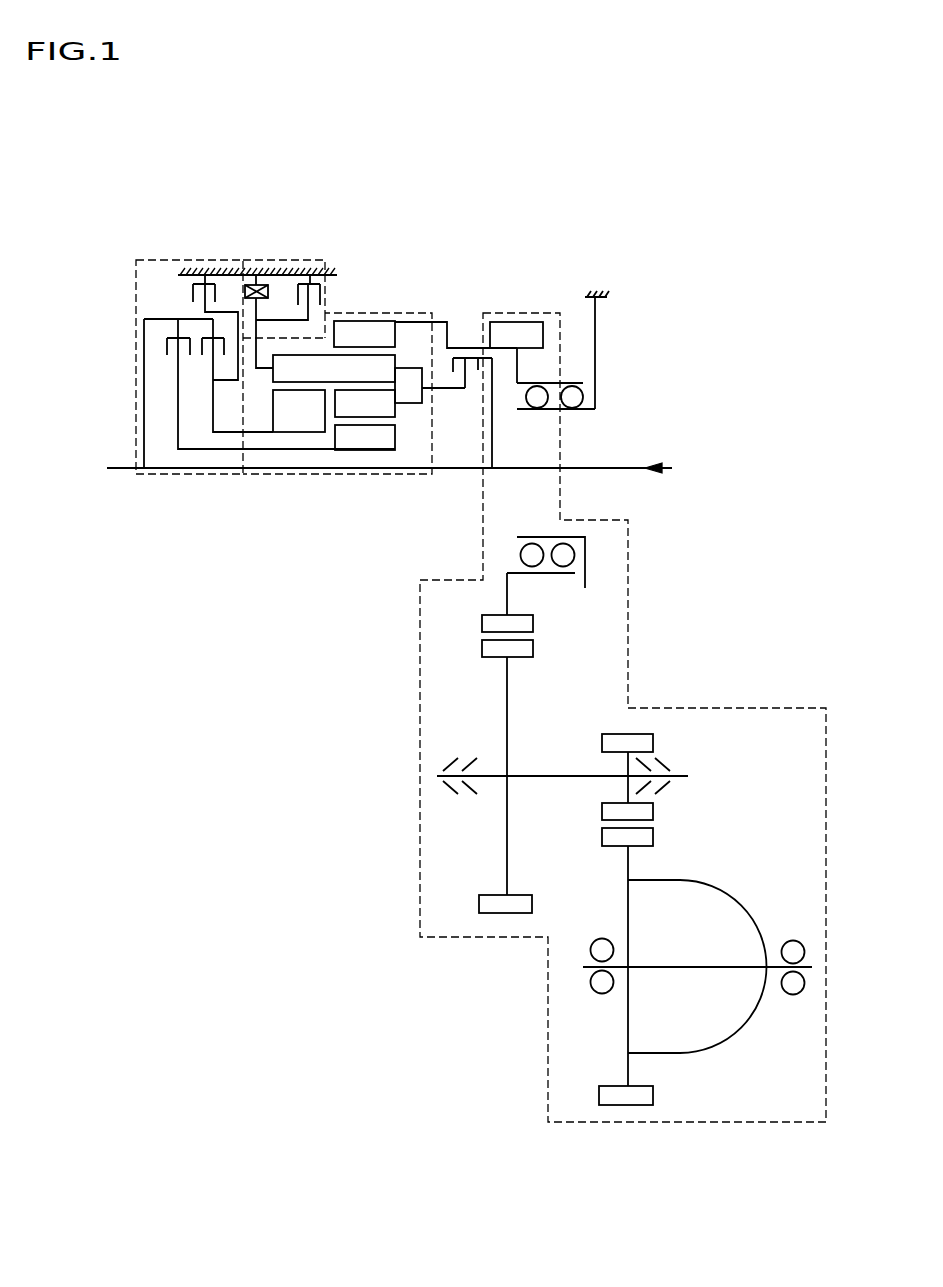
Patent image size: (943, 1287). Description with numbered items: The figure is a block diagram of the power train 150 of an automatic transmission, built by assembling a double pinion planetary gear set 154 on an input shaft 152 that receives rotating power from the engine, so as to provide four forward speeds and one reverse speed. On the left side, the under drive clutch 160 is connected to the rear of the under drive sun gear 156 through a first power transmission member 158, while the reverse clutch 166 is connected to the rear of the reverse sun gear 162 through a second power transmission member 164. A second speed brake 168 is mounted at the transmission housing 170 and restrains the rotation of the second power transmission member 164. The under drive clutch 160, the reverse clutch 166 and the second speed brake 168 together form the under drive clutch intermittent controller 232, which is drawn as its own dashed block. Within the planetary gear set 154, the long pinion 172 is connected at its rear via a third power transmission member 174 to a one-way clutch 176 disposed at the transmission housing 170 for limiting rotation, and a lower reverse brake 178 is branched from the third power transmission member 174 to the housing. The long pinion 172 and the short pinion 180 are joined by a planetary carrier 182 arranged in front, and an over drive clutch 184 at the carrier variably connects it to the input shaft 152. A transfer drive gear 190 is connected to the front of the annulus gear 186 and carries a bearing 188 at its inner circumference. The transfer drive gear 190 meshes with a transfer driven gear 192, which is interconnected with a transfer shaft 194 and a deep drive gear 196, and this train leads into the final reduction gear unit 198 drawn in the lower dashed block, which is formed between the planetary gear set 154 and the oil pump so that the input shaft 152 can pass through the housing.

The power train 150 is at (672, 258).
The input shaft 152 is at (629, 471).
The double pinion planetary gear set 154 is at (415, 312).
The under drive sun gear 156 is at (352, 442).
The first power transmission member 158 is at (178, 433).
The under drive clutch 160 is at (167, 346).
The reverse sun gear 162 is at (309, 432).
The second power transmission member 164 is at (213, 403).
The reverse clutch 166 is at (203, 349).
The second speed brake 168 is at (190, 291).
The transmission housing 170 is at (188, 272).
The long pinion 172 is at (286, 373).
The third power transmission member 174 is at (255, 327).
The one-way clutch 176 is at (246, 274).
The lower reverse brake 178 is at (325, 273).
The short pinion 180 is at (378, 407).
The planetary carrier 182 is at (422, 402).
The over drive clutch 184 is at (478, 367).
The annulus gear 186 is at (380, 323).
The bearing 188 is at (577, 397).
The transfer drive gear 190 is at (530, 332).
The transfer driven gear 192 is at (525, 648).
The transfer shaft 194 is at (650, 743).
The deep drive gear 196 is at (650, 838).
The final reduction gear unit 198 is at (418, 850).
The under drive clutch intermittent controller 232 is at (167, 476).